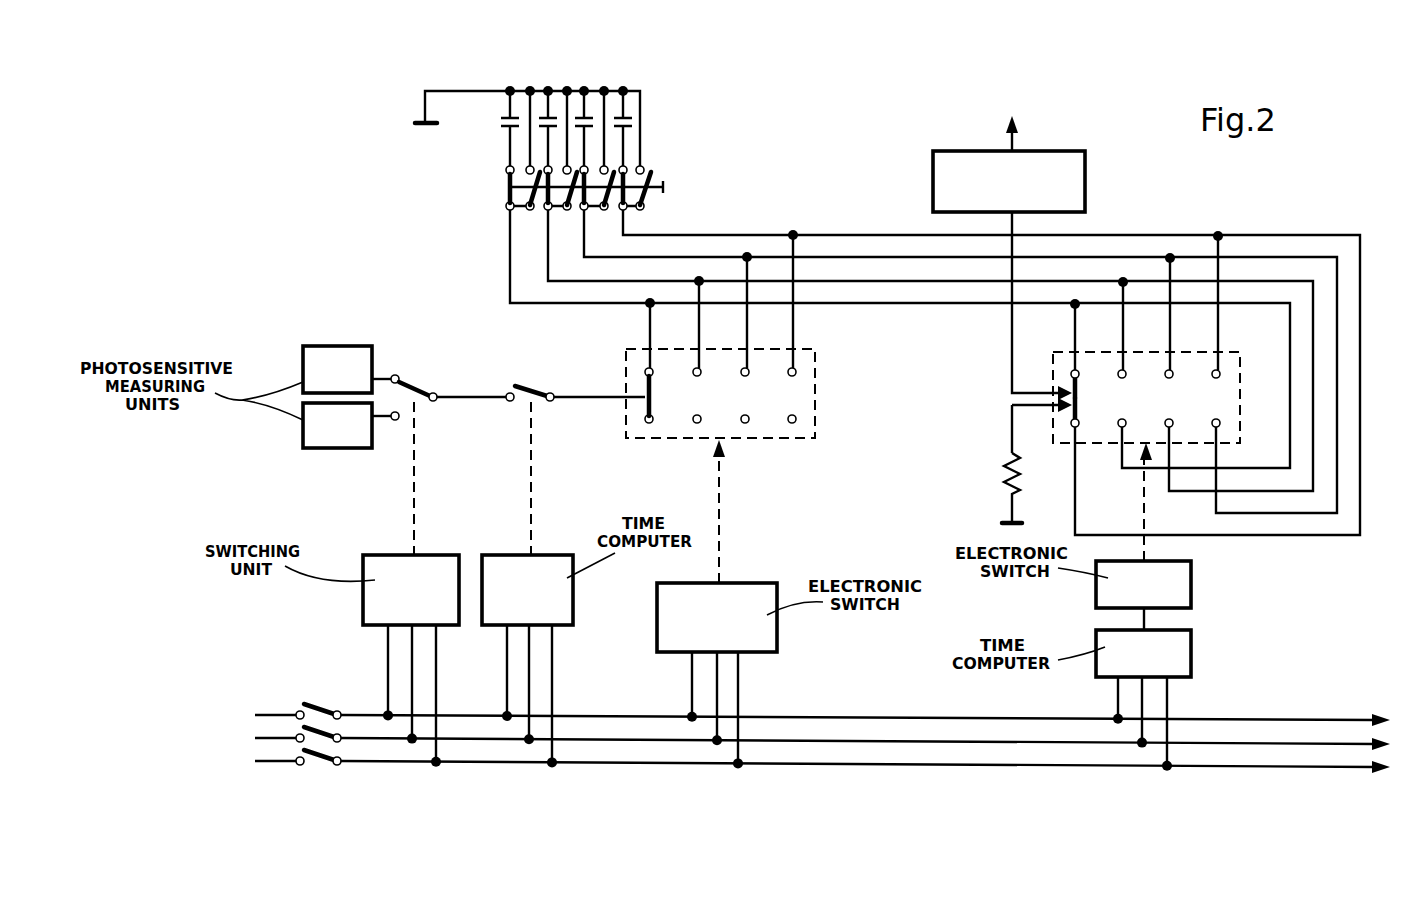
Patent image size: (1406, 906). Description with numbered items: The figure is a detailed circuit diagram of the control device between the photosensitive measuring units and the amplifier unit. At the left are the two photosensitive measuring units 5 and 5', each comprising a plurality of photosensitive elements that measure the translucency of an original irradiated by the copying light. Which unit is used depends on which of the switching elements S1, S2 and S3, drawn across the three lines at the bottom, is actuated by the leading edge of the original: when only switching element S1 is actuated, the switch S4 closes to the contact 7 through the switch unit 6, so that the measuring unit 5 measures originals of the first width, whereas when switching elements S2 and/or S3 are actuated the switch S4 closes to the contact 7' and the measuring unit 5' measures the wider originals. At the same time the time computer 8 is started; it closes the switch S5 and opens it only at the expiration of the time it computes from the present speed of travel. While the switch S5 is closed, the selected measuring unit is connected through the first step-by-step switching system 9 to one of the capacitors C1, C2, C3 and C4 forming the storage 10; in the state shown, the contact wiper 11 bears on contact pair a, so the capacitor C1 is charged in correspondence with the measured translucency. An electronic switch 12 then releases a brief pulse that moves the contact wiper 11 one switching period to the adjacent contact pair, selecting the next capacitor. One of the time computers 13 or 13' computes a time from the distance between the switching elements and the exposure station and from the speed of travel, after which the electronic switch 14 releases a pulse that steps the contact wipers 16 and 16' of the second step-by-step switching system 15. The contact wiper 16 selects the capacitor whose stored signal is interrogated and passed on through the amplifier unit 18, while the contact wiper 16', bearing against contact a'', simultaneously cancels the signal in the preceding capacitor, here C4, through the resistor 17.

The photosensitive measuring unit 5 is at (337, 353).
The photosensitive measuring unit 5' is at (337, 446).
The switch unit 6 is at (441, 577).
The contact 7 is at (391, 362).
The contact 7' is at (387, 431).
The time computer 8 is at (554, 577).
The first step-by-step switching system 9 is at (808, 382).
The storage 10 is at (570, 188).
The contact wiper 11 is at (644, 411).
The electronic switch 12 is at (753, 601).
The time computer 13 is at (1167, 653).
The time computer 13' is at (1178, 713).
The electronic switch 14 is at (1185, 576).
The second step-by-step switching system 15 is at (1232, 385).
The contact wiper 16 is at (1045, 379).
The contact wiper 16' is at (1044, 419).
The resistor 17 is at (1003, 482).
The amplifier unit 18 is at (1075, 178).
The capacitor C1 is at (506, 114).
The capacitor C2 is at (542, 114).
The capacitor C3 is at (578, 114).
The capacitor C4 is at (616, 114).
The switching element S1 is at (298, 699).
The switching element S2 is at (298, 729).
The switching element S3 is at (298, 770).
The switch S4 is at (424, 383).
The switch S5 is at (537, 383).